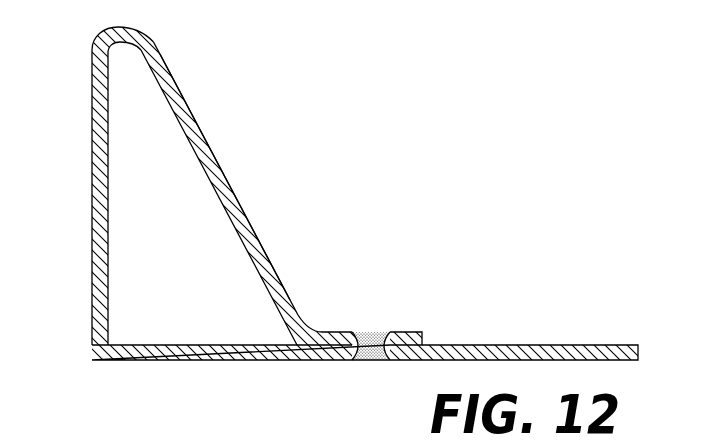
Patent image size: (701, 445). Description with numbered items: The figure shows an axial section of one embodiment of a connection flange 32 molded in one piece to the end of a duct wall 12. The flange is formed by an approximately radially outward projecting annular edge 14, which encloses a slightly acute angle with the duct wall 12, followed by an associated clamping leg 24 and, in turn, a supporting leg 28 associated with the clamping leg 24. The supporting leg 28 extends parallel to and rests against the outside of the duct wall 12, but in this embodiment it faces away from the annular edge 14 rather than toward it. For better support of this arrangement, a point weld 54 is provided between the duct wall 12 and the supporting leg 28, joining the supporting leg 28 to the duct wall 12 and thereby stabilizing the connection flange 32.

The duct wall 12 is at (502, 355).
The annular edge 14 is at (102, 158).
The clamping leg 24 is at (237, 198).
The supporting leg 28 is at (405, 332).
The connection flange 32 is at (190, 113).
The point weld 54 is at (363, 331).